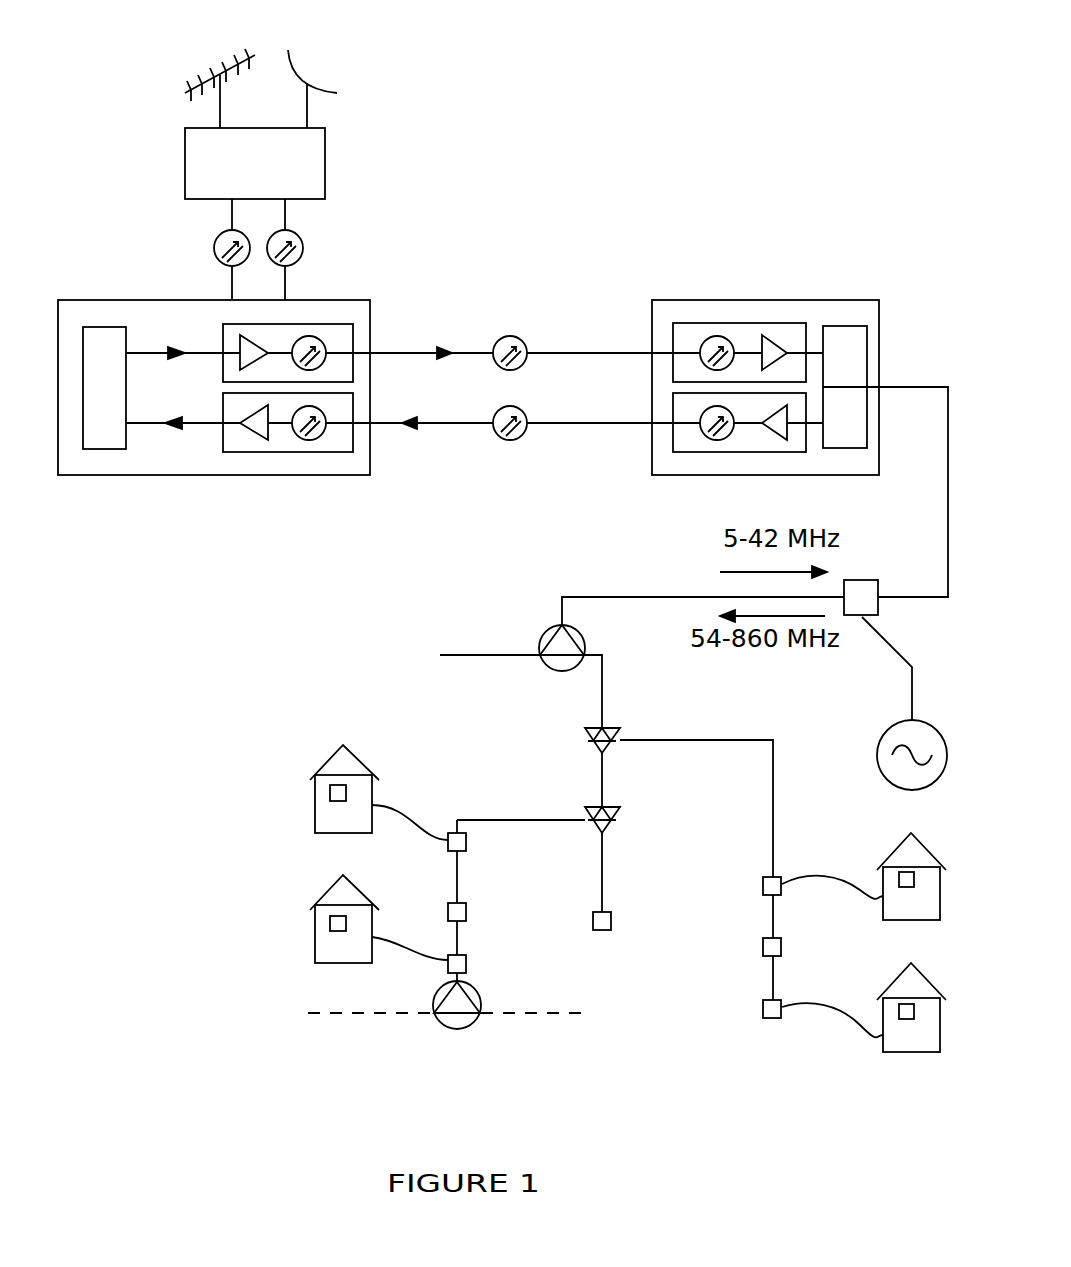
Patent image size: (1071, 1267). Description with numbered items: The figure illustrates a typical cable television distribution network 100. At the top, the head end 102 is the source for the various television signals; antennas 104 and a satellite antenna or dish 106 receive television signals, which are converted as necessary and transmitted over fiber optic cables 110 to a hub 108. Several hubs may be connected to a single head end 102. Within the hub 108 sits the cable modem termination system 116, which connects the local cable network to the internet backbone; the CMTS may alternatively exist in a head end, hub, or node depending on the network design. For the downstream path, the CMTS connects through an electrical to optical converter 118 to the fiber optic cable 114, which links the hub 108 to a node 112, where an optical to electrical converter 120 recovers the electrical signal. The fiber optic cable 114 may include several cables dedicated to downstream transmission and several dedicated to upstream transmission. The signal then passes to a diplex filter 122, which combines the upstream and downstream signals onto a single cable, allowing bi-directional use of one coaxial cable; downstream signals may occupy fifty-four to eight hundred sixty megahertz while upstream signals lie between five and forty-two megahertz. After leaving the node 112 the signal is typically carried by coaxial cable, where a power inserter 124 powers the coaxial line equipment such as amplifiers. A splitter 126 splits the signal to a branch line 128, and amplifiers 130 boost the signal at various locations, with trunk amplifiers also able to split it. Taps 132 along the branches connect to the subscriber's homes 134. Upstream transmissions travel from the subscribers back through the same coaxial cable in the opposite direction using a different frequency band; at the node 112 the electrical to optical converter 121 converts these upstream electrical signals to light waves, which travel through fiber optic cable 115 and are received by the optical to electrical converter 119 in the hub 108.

The cable television distribution network 100 is at (205, 931).
The head end 102 is at (255, 163).
The antennas 104 is at (207, 80).
The satellite antenna or dish 106 is at (293, 64).
The hub 108 is at (370, 455).
The fiber optic cables 110 is at (287, 230).
The node 112 is at (712, 475).
The fiber optic cable 114 is at (617, 350).
The fiber optic cable 115 is at (532, 423).
The cable modem termination system 116 is at (126, 440).
The electrical to optical converter 118 is at (330, 324).
The optical to electrical converter 119 is at (285, 452).
The optical to electrical converter 120 is at (712, 323).
The electrical to optical converter 121 is at (775, 393).
The diplex filter 122 is at (853, 326).
The power inserter 124 is at (862, 617).
The splitter 126 is at (585, 635).
The branch line 128 is at (498, 657).
The amplifiers 130 is at (612, 818).
The taps 132 is at (467, 847).
The subscriber's homes 134 is at (310, 907).